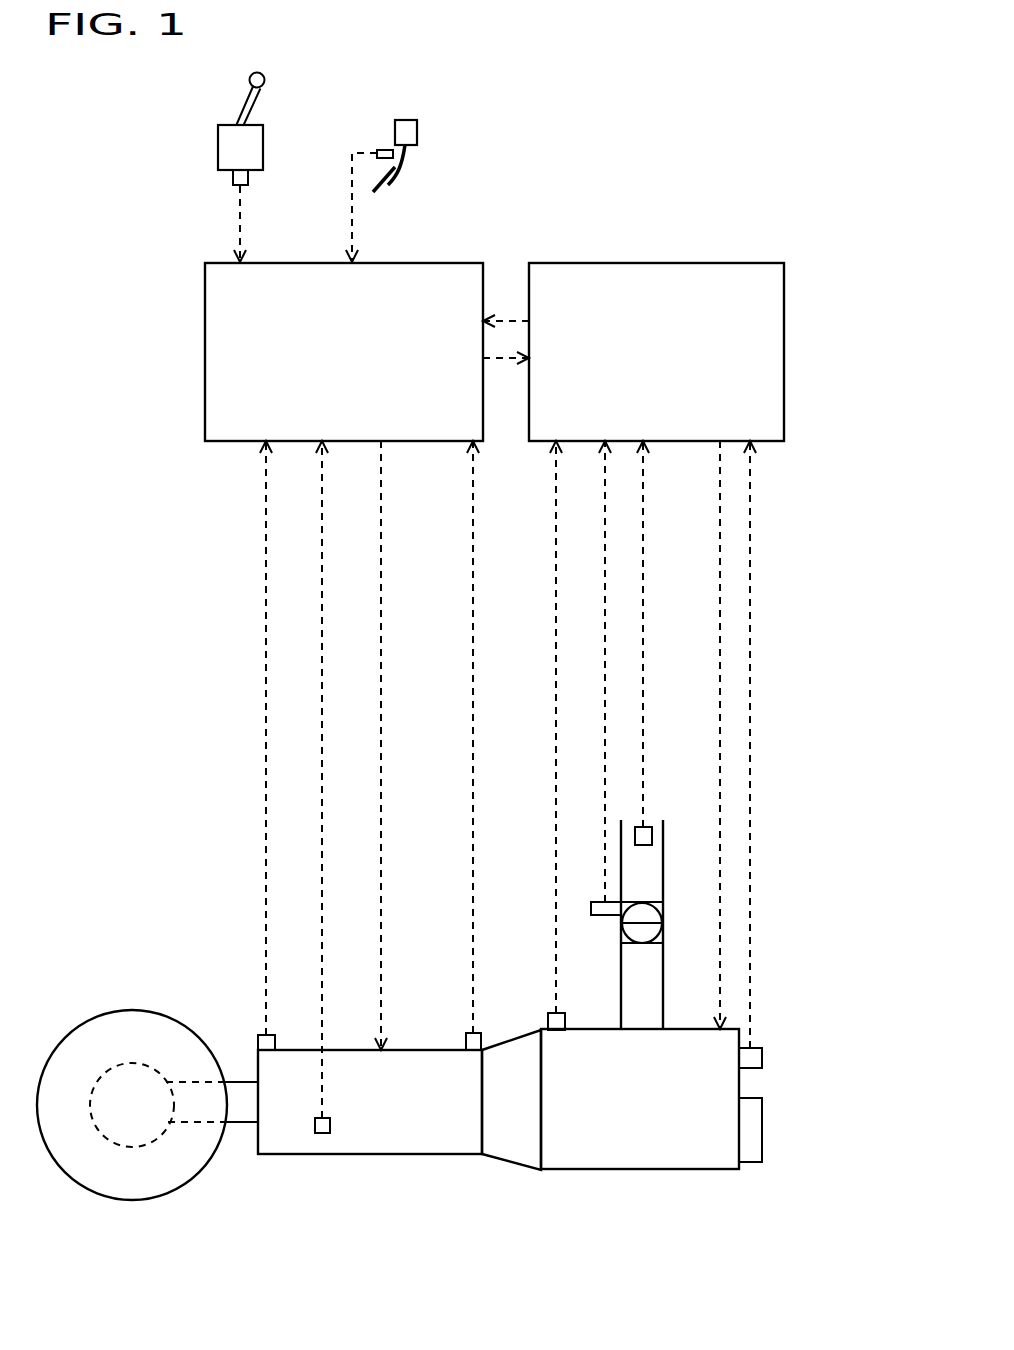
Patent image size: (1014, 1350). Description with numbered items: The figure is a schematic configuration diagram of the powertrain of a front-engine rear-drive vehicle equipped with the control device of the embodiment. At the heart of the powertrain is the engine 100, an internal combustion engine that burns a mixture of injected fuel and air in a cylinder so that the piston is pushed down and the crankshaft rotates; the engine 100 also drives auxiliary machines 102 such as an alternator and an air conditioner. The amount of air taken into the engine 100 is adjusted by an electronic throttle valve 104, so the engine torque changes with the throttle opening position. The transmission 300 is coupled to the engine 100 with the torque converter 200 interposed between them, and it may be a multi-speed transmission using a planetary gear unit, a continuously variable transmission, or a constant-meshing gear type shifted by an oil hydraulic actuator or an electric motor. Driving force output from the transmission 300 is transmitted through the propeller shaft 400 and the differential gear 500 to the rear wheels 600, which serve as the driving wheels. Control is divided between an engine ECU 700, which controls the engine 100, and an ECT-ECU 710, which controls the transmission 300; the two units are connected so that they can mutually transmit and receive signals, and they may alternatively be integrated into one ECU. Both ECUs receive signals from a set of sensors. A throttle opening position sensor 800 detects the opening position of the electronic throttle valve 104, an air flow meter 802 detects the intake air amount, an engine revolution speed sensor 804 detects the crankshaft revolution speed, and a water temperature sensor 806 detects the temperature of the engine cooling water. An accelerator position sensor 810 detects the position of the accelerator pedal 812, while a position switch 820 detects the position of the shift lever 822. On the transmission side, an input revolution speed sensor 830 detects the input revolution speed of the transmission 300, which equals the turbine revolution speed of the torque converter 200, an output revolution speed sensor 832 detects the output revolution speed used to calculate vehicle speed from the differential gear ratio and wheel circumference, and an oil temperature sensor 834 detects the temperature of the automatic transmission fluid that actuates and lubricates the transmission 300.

The engine 100 is at (642, 1170).
The auxiliary machines 102 is at (762, 1132).
The electronic throttle valve 104 is at (643, 902).
The torque converter 200 is at (512, 1163).
The transmission 300 is at (437, 1155).
The propeller shaft 400 is at (238, 1123).
The differential gear 500 is at (120, 1067).
The rear wheels 600 is at (130, 1200).
The engine ECU 700 is at (768, 262).
The ECT-ECU 710 is at (420, 262).
The throttle opening position sensor 800 is at (612, 915).
The air flow meter 802 is at (645, 827).
The engine revolution speed sensor 804 is at (762, 1060).
The water temperature sensor 806 is at (548, 1025).
The accelerator position sensor 810 is at (379, 150).
The accelerator pedal 812 is at (403, 173).
The position switch 820 is at (233, 178).
The shift lever 822 is at (245, 104).
The input revolution speed sensor 830 is at (466, 1040).
The output revolution speed sensor 832 is at (258, 1040).
The oil temperature sensor 834 is at (322, 1135).